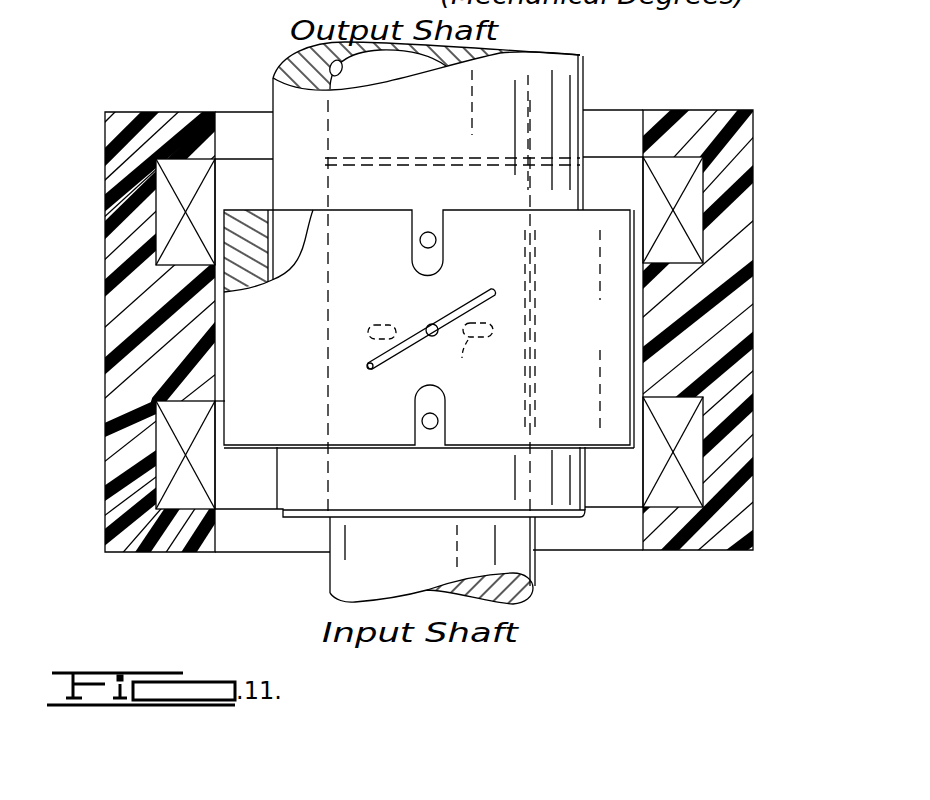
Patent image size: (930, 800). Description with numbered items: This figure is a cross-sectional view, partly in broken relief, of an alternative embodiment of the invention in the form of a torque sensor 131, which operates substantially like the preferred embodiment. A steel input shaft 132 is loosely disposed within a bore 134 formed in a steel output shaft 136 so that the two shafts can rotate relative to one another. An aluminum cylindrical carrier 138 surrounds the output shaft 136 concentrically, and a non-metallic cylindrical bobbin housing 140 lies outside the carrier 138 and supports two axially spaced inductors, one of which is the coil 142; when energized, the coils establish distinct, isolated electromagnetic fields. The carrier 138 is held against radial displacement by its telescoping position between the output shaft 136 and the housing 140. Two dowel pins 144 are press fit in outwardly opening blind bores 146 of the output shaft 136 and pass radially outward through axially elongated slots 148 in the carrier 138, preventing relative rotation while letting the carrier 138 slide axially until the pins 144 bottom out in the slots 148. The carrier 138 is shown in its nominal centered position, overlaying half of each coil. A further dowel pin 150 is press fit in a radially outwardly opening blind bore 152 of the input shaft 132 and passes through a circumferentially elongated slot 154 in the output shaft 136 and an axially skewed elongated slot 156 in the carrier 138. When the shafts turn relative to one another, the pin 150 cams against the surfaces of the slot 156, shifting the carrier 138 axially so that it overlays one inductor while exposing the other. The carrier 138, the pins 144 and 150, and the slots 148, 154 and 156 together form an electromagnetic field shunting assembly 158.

The torque sensor 131 is at (132, 104).
The input shaft 132 is at (517, 562).
The bore 134 is at (302, 60).
The output shaft 136 is at (563, 73).
The cylindrical carrier 138 is at (487, 455).
The bobbin housing 140 is at (768, 270).
The inductor 142 is at (693, 186).
The dowel pins 144 is at (437, 241).
The blind bores 146 is at (431, 232).
The axially elongated slots 148 is at (420, 262).
The dowel pin 150 is at (424, 327).
The blind bore 152 is at (434, 325).
The circumferentially elongated slot 154 is at (486, 347).
The axially skewed elongated slot 156 is at (368, 365).
The electromagnetic field shunting assembly 158 is at (386, 458).